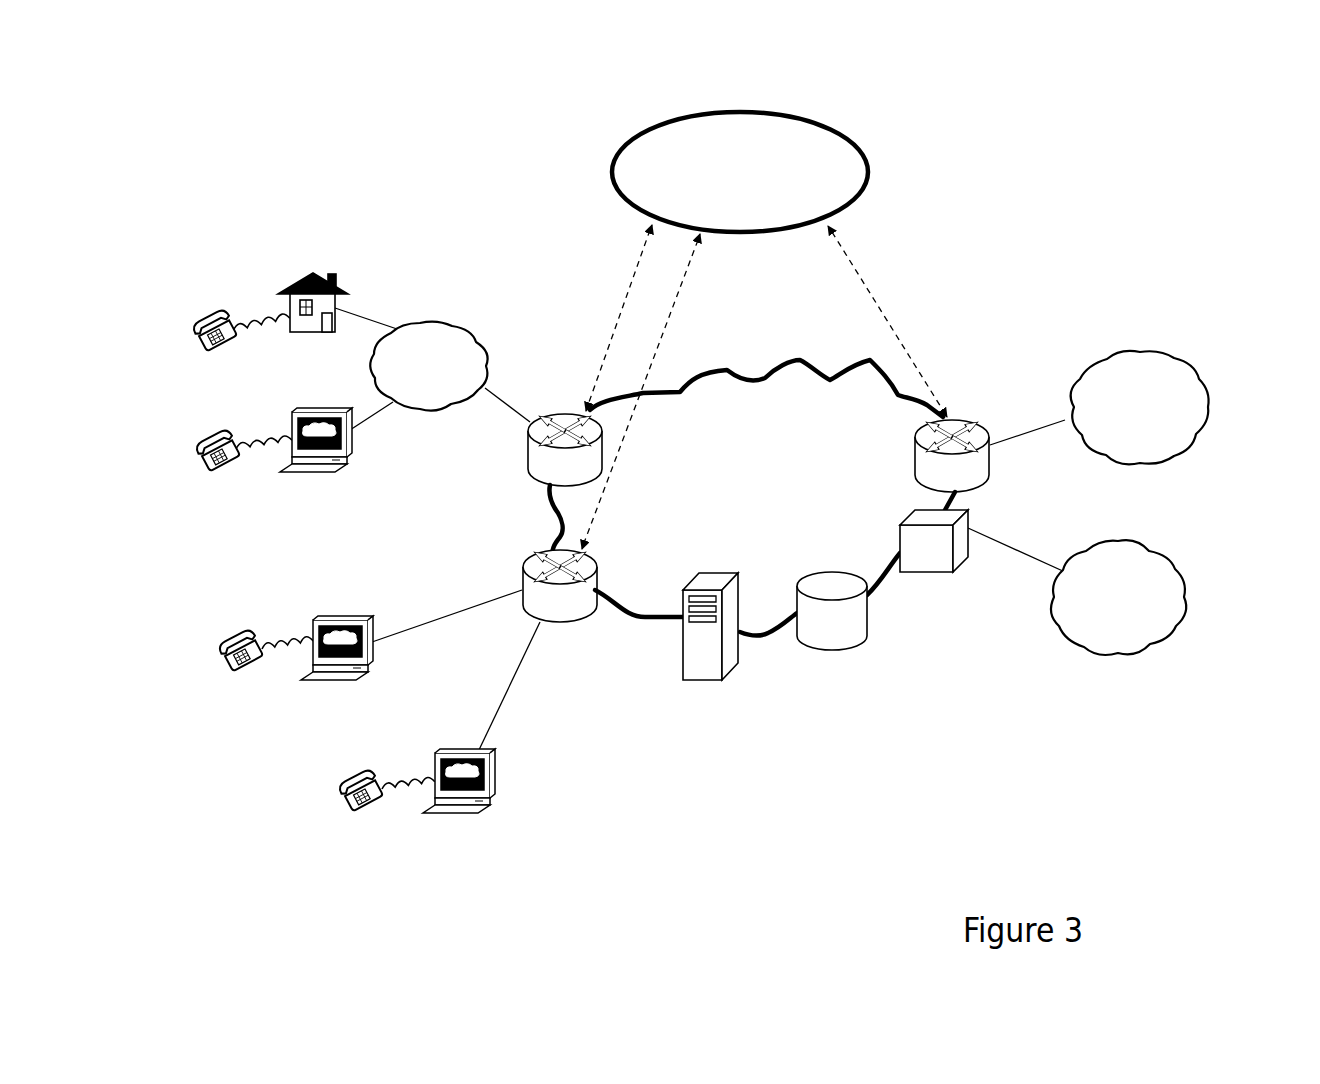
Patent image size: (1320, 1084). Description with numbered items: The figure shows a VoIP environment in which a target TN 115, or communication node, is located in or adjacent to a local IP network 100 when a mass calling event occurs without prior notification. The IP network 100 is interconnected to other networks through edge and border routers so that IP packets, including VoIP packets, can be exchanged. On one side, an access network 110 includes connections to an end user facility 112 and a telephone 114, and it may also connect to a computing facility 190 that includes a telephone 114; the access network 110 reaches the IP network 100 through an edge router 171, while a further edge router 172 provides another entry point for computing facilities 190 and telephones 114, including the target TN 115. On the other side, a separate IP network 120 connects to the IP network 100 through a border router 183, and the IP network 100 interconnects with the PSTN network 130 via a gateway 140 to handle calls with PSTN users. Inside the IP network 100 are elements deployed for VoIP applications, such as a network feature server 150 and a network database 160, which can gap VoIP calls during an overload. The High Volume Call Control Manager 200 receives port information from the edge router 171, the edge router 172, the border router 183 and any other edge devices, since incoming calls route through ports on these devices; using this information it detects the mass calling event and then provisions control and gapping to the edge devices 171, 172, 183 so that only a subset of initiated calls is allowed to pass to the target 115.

The IP network 100 is at (735, 372).
The access network 110 is at (470, 322).
The residence / subscriber premises 112 is at (343, 283).
The telephone 114 is at (197, 330).
The target TN 115 is at (222, 657).
The IP network 120 is at (1208, 440).
The PSTN network 130 is at (1190, 590).
The gateway 140 is at (927, 577).
The network feature server 150 is at (702, 687).
The network database 160 is at (833, 659).
The edge router 171 is at (527, 440).
The edge router 172 is at (518, 568).
The border router 183 is at (970, 418).
The computing facility 190 is at (307, 473).
The High Volume Call Control Manager (HVCCM) 200 is at (832, 120).